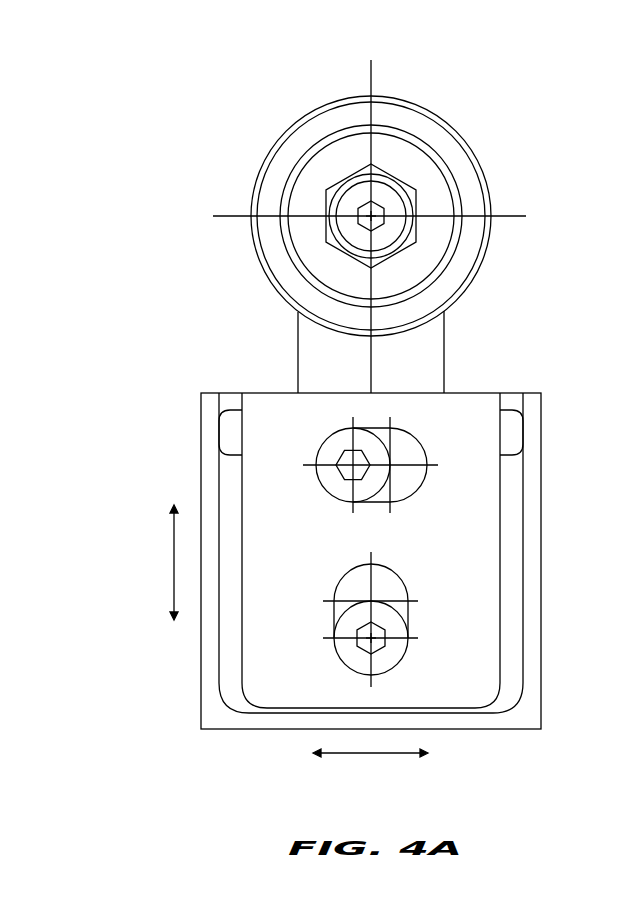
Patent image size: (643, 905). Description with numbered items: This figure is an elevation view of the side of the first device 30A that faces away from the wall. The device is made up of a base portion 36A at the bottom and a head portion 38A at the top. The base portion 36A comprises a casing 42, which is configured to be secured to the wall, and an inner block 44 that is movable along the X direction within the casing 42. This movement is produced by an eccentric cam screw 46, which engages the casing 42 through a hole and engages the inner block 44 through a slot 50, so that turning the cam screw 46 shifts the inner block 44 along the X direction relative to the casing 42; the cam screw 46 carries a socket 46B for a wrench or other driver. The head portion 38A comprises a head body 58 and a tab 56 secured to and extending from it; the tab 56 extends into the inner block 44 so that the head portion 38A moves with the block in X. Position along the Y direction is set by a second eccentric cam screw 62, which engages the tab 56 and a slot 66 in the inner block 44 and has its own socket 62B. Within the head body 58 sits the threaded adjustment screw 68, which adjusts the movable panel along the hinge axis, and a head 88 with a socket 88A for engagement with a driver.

The first device 30A is at (318, 419).
The head portion 38A is at (301, 216).
The base portion 36A is at (318, 575).
The head body 58 is at (488, 189).
The adjustment screw 68 is at (437, 228).
The head 88 is at (385, 228).
The socket 88A is at (368, 222).
The tab 56 is at (427, 358).
The socket 62B is at (362, 458).
The slot 66 is at (427, 481).
The cam screw 62 is at (363, 477).
The slot 50 is at (400, 575).
The cam screw 46 is at (392, 627).
The socket 46B is at (375, 645).
The inner block 44 is at (273, 667).
The casing 42 is at (213, 722).